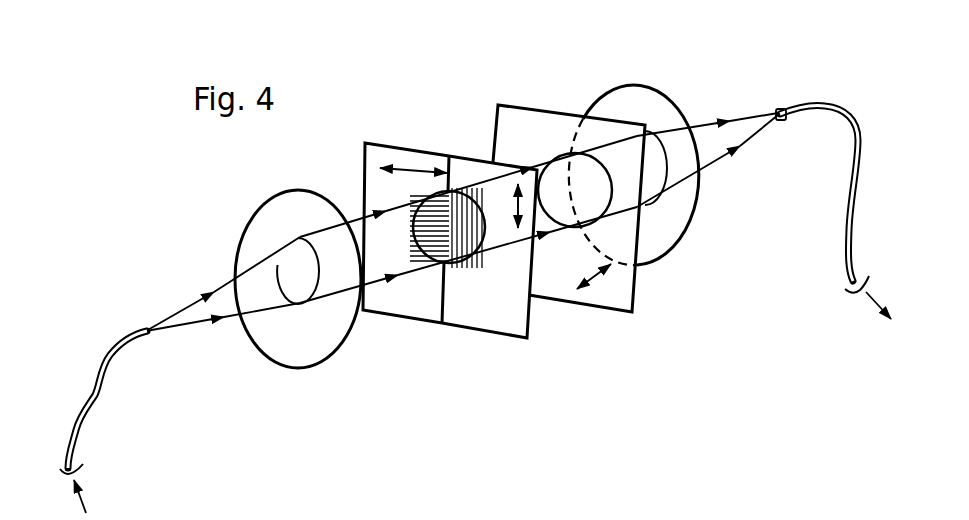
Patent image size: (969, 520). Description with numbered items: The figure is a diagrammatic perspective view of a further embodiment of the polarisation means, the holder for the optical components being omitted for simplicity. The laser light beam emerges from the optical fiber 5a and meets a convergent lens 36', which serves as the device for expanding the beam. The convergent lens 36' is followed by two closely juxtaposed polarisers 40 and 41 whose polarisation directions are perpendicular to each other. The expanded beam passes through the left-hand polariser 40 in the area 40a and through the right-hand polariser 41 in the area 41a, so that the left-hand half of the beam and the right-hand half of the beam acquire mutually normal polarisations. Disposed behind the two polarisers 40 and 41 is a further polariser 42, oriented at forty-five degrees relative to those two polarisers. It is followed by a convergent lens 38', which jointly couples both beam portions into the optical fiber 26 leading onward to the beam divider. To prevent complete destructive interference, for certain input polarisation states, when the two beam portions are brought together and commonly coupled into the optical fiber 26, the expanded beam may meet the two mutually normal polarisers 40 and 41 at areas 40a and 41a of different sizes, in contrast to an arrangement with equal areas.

The optical fiber 5a is at (83, 417).
The convergent lens 36' is at (298, 323).
The left-hand polariser 40 is at (408, 302).
The right-hand polariser 41 is at (480, 318).
The area of left-hand polariser 40a is at (426, 200).
The area of right-hand polariser 41a is at (466, 208).
The polariser 42 is at (607, 292).
The convergent lens 38' is at (634, 208).
The optical fiber 26 is at (845, 223).